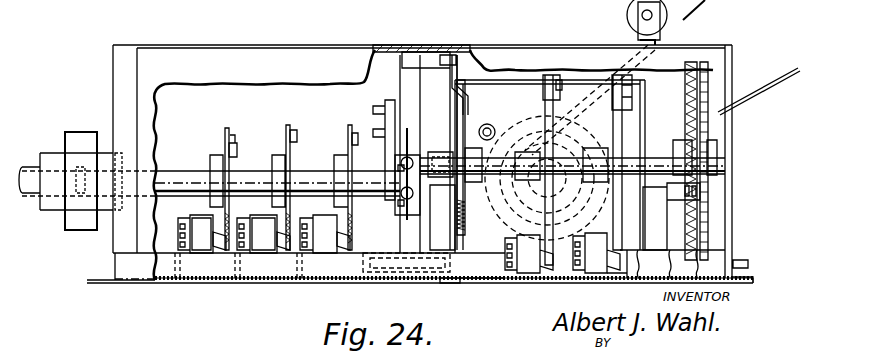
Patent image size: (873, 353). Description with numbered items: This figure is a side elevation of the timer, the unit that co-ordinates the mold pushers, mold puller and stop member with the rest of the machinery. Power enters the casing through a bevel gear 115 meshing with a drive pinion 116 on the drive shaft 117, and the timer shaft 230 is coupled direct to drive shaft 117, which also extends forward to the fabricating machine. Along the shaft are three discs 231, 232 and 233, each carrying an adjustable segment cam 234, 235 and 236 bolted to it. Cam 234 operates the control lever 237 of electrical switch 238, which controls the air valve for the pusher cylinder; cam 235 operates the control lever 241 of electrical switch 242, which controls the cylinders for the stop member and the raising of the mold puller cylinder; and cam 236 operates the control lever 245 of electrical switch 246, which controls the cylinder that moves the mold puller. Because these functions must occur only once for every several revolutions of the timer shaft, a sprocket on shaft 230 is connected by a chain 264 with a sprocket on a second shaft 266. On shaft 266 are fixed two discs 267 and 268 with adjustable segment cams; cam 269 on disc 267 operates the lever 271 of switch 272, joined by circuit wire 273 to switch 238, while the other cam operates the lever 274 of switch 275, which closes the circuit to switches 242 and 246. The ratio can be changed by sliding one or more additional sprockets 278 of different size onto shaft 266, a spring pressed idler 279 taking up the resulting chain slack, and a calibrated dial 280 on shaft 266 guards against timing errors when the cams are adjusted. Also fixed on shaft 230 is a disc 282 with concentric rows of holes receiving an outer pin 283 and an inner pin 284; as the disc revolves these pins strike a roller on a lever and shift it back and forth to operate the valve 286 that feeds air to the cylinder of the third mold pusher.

The drive shaft 117 is at (25, 167).
The timer shaft 230 is at (148, 160).
The disc 231 is at (222, 137).
The disc 232 is at (284, 143).
The disc 233 is at (347, 153).
The segment cam 234 is at (230, 130).
The segment cam 235 is at (290, 127).
The segment cam 236 is at (350, 127).
The control lever 237 is at (227, 244).
The electrical switch 238 is at (197, 244).
The control lever 241 is at (288, 238).
The electrical switch 242 is at (263, 241).
The control lever 245 is at (425, 262).
The electrical switch 246 is at (350, 240).
The chain 264 is at (727, 80).
The shaft 266 is at (630, 150).
The disc 267 is at (528, 100).
The disc 268 is at (600, 108).
The segment cam 269 is at (570, 98).
The lever 271 is at (523, 264).
The switch 272 is at (498, 279).
The circuit wire 273 is at (644, 22).
The lever 274 is at (614, 274).
The switch 275 is at (590, 262).
The sprocket 278 is at (708, 226).
The spring pressed idler 279 is at (718, 150).
The calibrated dial 280 is at (472, 114).
The disc 282 is at (448, 287).
The pin 283 is at (398, 102).
The pin 284 is at (398, 150).
The valve 286 is at (418, 155).
The bevel gear 115 is at (506, 120).
The drive pinion 116 is at (467, 218).